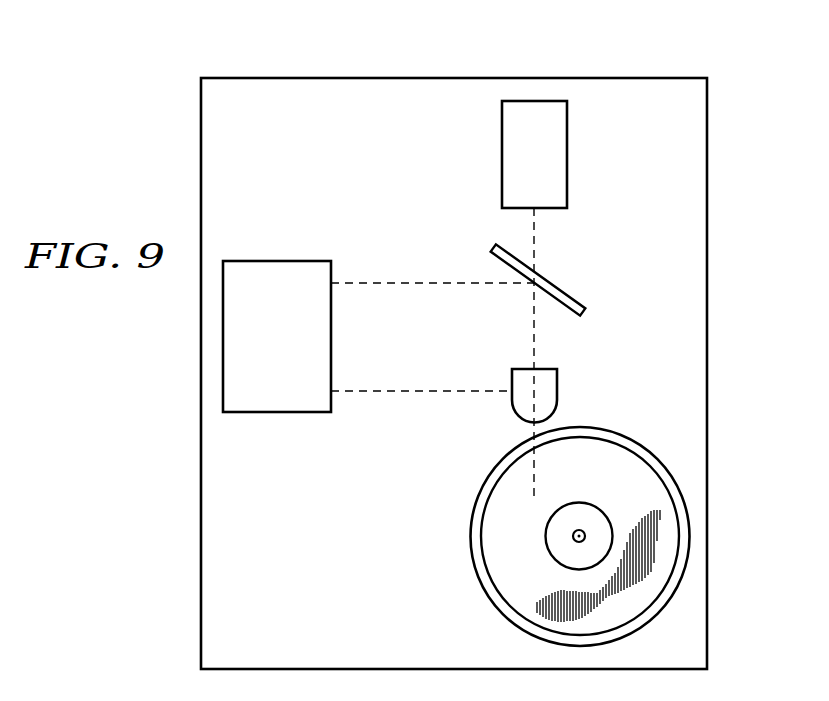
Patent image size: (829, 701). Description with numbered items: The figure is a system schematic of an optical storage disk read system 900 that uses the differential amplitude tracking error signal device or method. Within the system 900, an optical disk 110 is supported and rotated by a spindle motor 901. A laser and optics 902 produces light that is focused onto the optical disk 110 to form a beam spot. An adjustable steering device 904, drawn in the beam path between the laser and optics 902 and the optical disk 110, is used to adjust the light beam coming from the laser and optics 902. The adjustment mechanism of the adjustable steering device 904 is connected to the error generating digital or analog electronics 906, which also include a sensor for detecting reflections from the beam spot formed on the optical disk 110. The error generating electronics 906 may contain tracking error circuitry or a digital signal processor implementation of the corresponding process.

The optical storage disk read system 900 is at (200, 376).
The error generating electronics 906 is at (276, 261).
The laser and optics 902 is at (568, 152).
The adjustable steering device 904 is at (558, 383).
The optical disk 110 is at (470, 536).
The spindle motor 901 is at (578, 502).